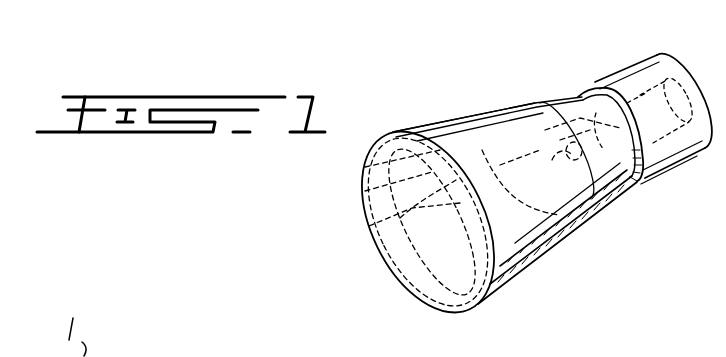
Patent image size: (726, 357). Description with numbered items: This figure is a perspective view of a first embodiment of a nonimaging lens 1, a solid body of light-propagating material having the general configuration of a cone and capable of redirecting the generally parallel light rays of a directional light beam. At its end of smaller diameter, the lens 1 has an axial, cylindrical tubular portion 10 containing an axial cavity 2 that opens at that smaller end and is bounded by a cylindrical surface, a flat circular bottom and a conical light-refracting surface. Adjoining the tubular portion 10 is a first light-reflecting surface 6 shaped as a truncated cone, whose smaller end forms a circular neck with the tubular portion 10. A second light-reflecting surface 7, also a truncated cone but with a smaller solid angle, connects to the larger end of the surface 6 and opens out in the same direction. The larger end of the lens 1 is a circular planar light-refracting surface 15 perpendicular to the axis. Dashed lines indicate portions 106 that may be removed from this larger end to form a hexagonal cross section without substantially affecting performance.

The nonimaging lens 1 is at (392, 55).
The axial cavity 2 is at (635, 188).
The first light-reflecting surface 6 is at (563, 100).
The second light-reflecting surface 7 is at (533, 269).
The tubular portion 10 is at (692, 150).
The light-refracting planar surface 15 is at (407, 262).
The removed portions 106 is at (363, 165).